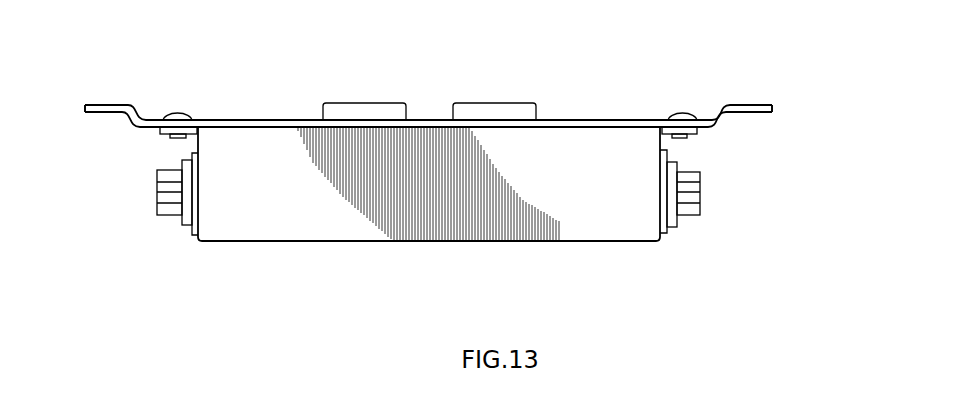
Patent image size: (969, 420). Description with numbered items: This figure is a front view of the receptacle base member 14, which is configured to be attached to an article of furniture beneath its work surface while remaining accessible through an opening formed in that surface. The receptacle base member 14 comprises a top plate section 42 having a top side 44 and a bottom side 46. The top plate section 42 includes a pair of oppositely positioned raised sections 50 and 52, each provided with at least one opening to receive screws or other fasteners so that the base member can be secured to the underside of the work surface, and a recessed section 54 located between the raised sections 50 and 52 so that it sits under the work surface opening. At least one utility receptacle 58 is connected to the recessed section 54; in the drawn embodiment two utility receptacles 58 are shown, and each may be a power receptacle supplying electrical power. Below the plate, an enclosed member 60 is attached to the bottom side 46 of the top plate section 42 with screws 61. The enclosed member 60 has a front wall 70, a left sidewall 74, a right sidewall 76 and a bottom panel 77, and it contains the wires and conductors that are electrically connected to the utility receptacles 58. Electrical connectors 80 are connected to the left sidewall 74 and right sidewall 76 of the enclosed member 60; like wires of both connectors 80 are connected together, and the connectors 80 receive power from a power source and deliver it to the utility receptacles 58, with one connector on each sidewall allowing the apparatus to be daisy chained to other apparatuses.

The receptacle base member 14 is at (603, 106).
The top plate section 42 is at (575, 120).
The top side 44 is at (228, 121).
The bottom side 46 is at (147, 130).
The raised section 50 is at (101, 108).
The raised section 52 is at (757, 106).
The recessed section 54 is at (283, 121).
The utility receptacle 58 is at (373, 103).
The enclosed member 60 is at (610, 243).
The screws 61 is at (177, 116).
The front wall 70 is at (570, 188).
The left sidewall 74 is at (666, 148).
The right sidewall 76 is at (193, 237).
The bottom panel 77 is at (323, 243).
The electrical connectors 80 is at (158, 208).